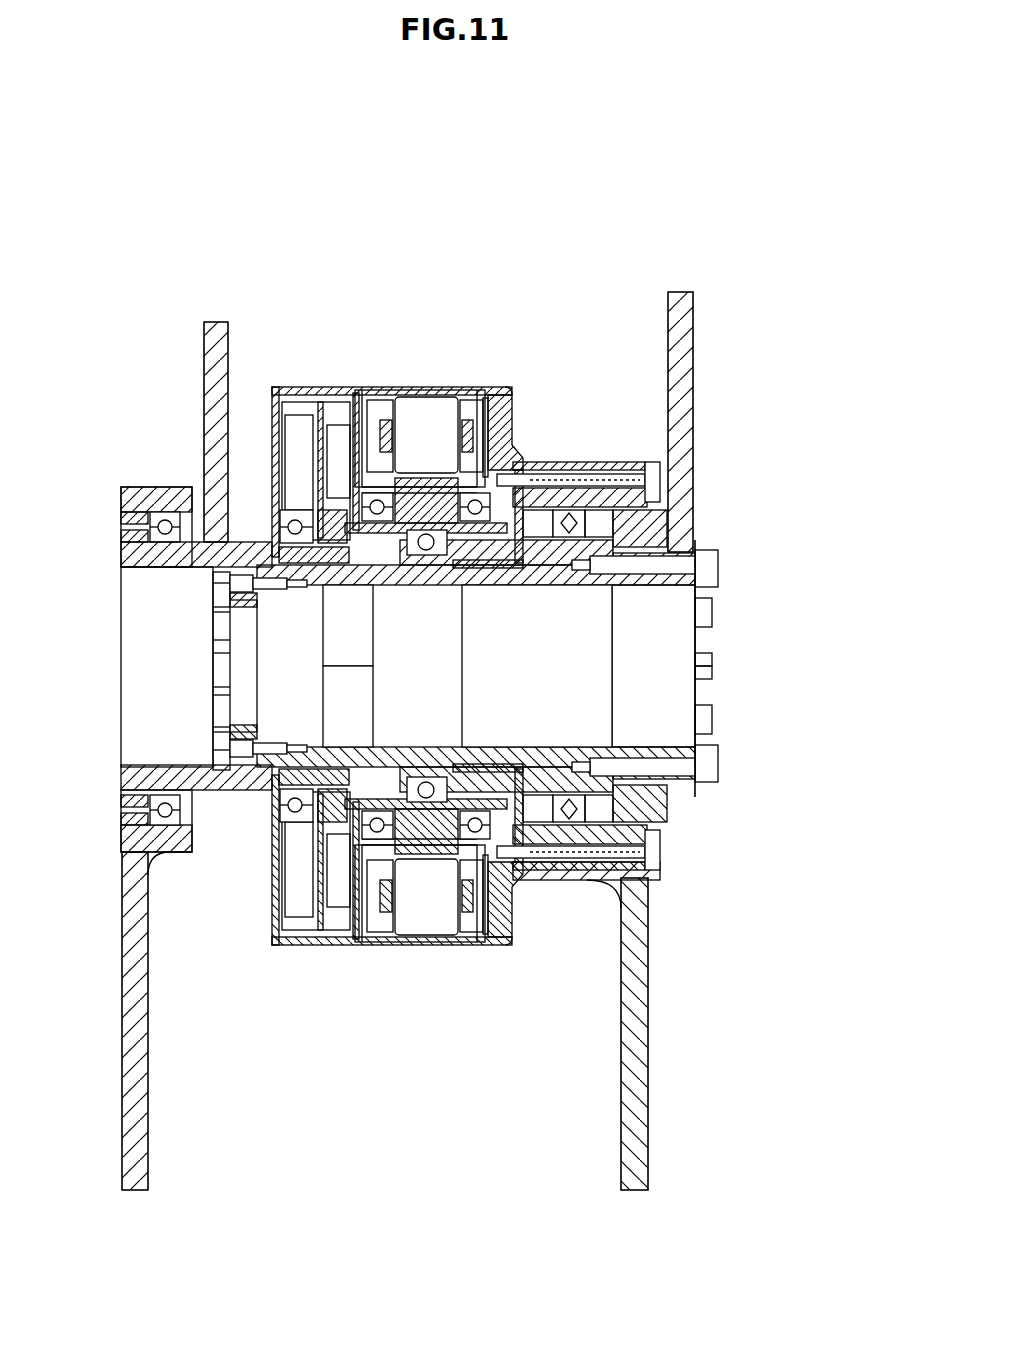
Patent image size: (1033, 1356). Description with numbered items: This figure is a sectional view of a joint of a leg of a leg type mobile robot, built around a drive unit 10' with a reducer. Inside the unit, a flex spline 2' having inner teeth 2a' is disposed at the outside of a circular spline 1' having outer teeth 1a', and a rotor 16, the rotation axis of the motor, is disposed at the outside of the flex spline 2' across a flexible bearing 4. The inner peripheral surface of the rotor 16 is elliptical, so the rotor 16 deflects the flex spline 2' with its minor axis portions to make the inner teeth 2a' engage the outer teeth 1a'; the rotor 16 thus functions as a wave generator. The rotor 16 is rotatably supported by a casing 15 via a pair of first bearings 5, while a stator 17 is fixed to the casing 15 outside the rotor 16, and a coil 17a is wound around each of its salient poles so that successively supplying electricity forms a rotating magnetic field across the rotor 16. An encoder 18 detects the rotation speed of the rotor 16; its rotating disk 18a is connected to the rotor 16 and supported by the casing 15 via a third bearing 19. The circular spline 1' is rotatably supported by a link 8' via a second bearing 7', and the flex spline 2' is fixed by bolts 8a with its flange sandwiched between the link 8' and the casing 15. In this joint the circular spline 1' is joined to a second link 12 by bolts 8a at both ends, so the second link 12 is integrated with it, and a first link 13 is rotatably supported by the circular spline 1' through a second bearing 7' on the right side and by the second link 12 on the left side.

The circular spline 1' is at (688, 668).
The outer teeth 1a' is at (606, 664).
The flex spline 2' is at (586, 635).
The inner teeth 2a' is at (381, 666).
The flexible bearing 4 is at (420, 543).
The first bearings 5 is at (350, 500).
The second bearing 7' is at (420, 670).
The link 8' is at (629, 661).
The bolts 8a is at (218, 583).
The drive unit with reducer 10' is at (366, 733).
The second link 12 is at (213, 316).
The first link 13 is at (134, 1202).
The casing 15 is at (442, 420).
The rotor 16 is at (418, 476).
The stator 17 is at (478, 428).
The coil 17a is at (515, 448).
The encoder 18 is at (311, 403).
The rotating disk 18a is at (321, 402).
The third bearing 19 is at (280, 522).